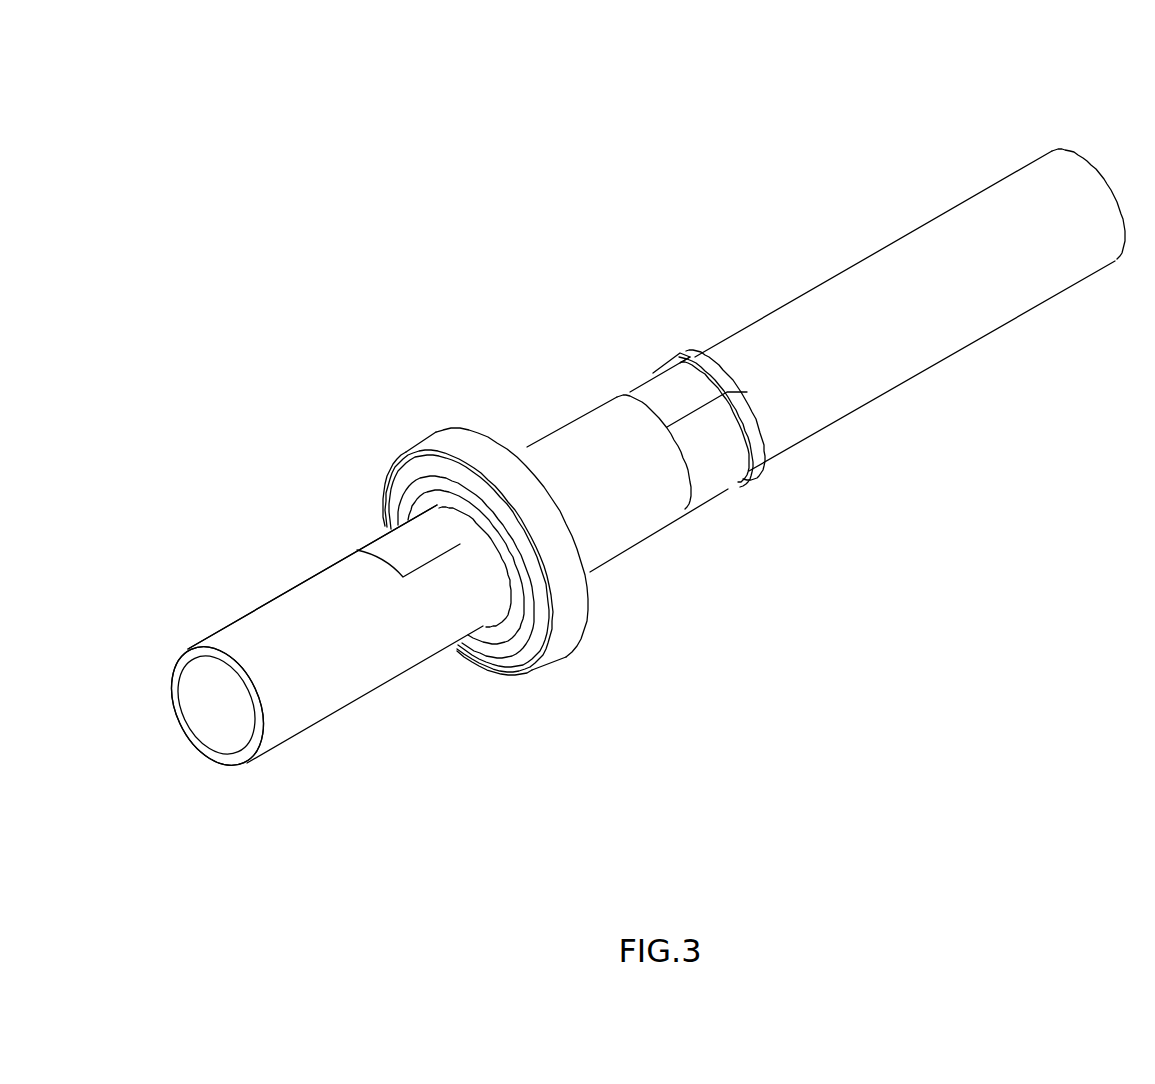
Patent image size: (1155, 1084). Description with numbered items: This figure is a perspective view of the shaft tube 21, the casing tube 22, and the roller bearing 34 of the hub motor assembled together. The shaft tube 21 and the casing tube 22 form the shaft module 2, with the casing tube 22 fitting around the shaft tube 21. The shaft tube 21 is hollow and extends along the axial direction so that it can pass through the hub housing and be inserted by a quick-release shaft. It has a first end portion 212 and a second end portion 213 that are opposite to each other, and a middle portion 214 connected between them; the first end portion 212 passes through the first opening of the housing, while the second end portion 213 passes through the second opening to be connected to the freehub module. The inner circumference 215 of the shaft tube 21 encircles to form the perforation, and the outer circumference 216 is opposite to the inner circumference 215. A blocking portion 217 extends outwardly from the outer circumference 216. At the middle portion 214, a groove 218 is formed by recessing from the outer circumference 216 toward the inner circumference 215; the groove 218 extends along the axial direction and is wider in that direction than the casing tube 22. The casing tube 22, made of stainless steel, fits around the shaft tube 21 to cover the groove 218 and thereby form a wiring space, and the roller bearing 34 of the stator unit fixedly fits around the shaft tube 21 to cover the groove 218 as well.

The shaft module 2 is at (846, 147).
The shaft tube 21 is at (320, 680).
The first end portion 212 is at (222, 640).
The second end portion 213 is at (1092, 203).
The middle portion 214 is at (740, 353).
The inner circumference 215 is at (210, 714).
The outer circumference 216 is at (940, 340).
The blocking portion 217 is at (764, 448).
The groove 218 is at (427, 540).
The casing tube 22 is at (678, 500).
The roller bearing 34 is at (568, 610).